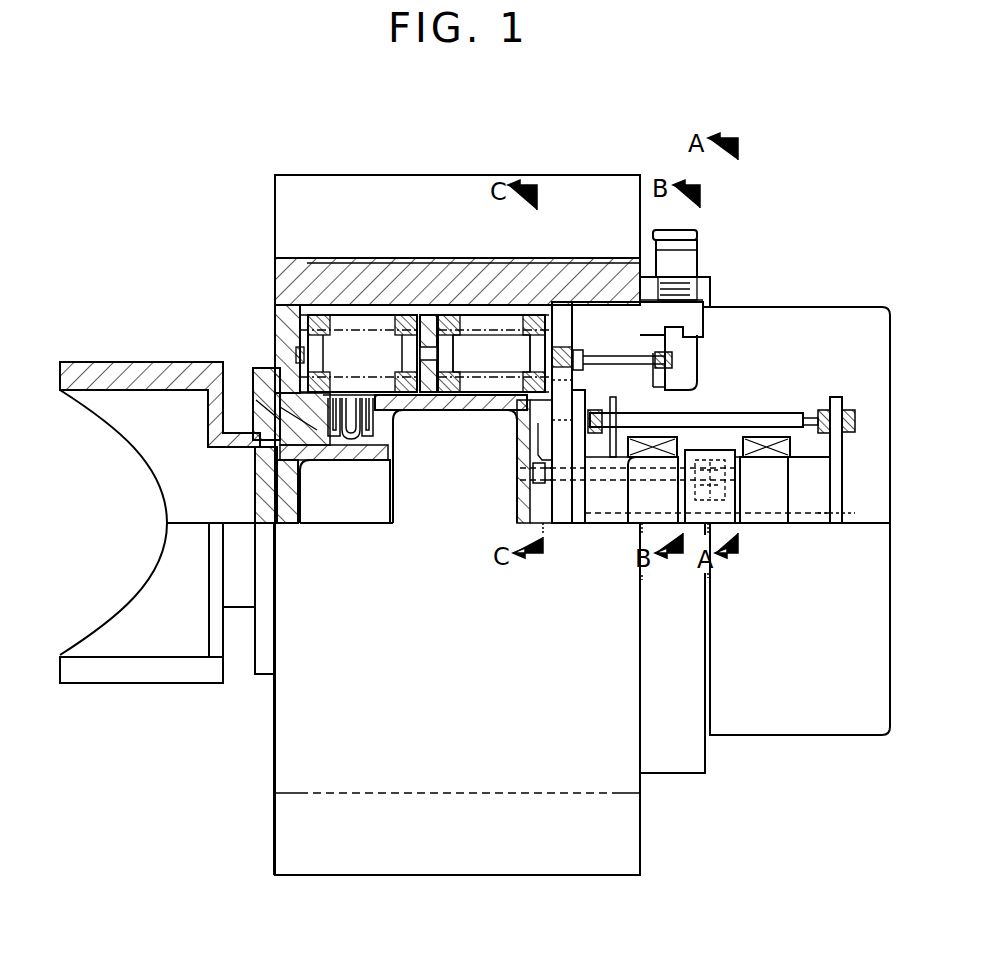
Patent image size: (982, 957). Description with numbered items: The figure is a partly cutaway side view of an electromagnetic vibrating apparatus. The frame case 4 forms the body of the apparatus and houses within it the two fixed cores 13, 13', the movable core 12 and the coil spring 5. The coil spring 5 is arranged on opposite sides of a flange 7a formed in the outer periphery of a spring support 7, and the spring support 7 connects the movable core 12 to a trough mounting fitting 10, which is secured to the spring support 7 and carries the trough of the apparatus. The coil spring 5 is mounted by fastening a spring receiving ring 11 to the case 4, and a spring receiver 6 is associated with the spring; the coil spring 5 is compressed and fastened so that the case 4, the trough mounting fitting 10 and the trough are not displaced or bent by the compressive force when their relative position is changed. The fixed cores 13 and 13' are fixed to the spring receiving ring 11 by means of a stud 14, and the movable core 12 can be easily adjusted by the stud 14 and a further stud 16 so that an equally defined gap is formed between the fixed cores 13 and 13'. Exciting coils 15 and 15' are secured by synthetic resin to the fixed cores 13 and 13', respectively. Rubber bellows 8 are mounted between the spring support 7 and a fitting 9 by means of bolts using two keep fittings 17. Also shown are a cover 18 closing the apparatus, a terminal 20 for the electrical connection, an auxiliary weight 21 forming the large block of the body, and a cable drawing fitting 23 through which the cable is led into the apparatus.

The frame case 4 is at (275, 267).
The coil spring 5 is at (448, 317).
The spring receiver 6 is at (460, 347).
The spring support 7 is at (432, 400).
The flange 7a is at (427, 320).
The rubber bellows 8 is at (357, 440).
The fitting 9 is at (263, 368).
The trough mounting fitting 10 is at (130, 362).
The spring receiving ring 11 is at (573, 328).
The movable core 12 is at (722, 450).
The fixed core 13 is at (607, 412).
The fixed core 13' is at (849, 445).
The stud 14 is at (720, 412).
The exciting coil 15 is at (653, 445).
The exciting coil 15' is at (787, 445).
The stud 16 is at (563, 483).
The keep fitting 17 is at (333, 460).
The cover 18 is at (825, 307).
The terminal 20 is at (667, 350).
The auxiliary weight 21 is at (343, 187).
The cable drawing fitting 23 is at (657, 230).